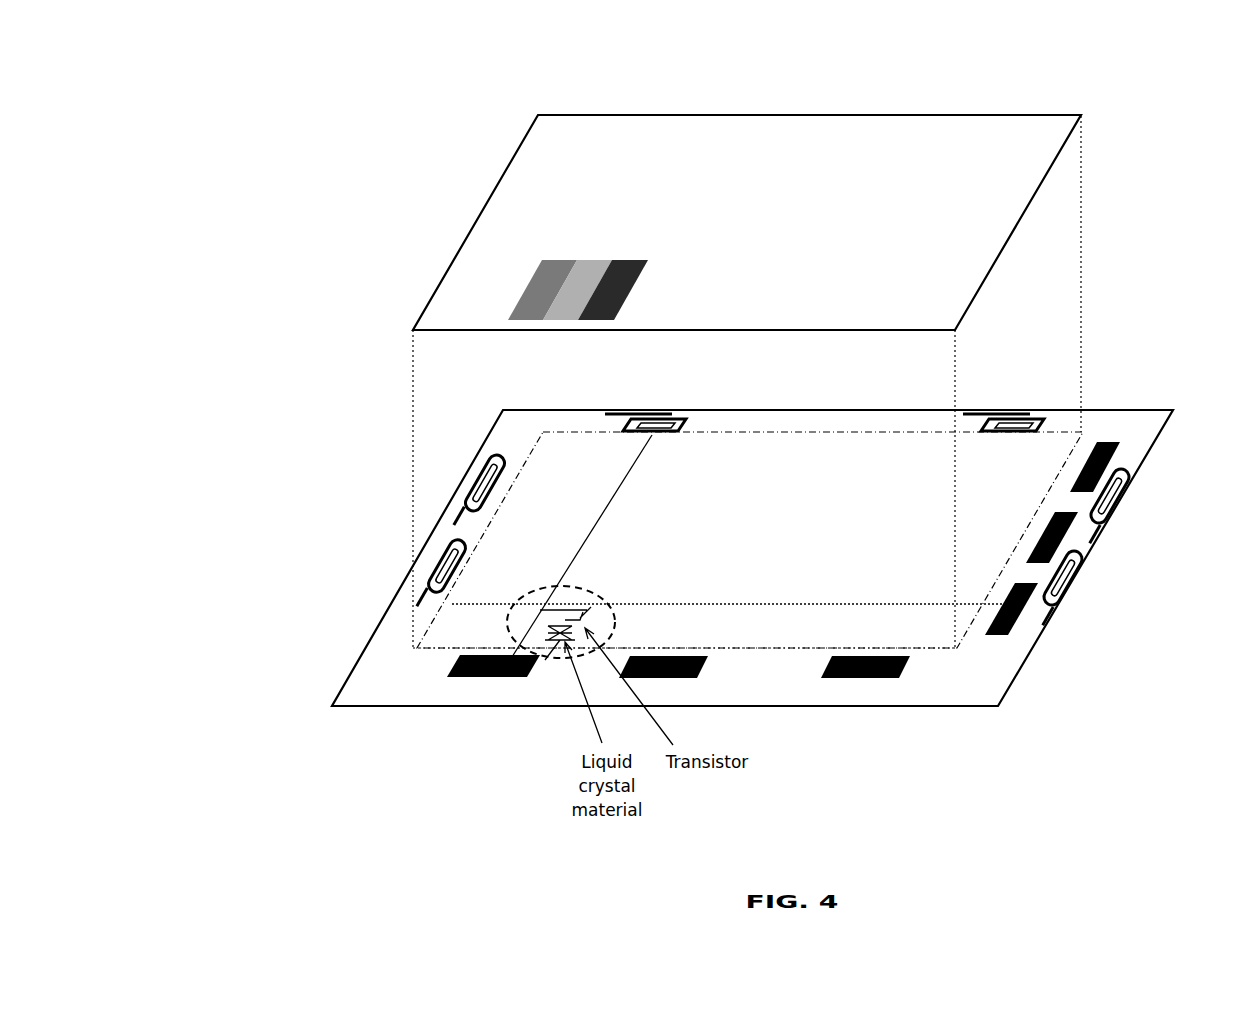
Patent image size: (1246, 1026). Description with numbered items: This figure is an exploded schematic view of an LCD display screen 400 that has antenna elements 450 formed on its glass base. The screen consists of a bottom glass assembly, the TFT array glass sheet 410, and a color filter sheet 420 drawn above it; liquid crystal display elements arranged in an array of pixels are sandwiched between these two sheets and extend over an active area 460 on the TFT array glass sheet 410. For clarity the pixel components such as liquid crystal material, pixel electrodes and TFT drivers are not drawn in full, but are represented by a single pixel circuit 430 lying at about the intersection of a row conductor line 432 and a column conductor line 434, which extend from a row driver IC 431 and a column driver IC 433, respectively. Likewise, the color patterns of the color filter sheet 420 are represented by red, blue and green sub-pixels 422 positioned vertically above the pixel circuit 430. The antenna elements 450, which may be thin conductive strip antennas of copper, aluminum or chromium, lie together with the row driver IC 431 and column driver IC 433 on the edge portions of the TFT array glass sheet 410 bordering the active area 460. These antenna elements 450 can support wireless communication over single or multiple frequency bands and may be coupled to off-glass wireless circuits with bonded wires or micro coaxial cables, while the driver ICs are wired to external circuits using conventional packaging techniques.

The LCD display screen 400 is at (766, 35).
The TFT array glass sheet 410 is at (1000, 708).
The color filter sheet 420 is at (489, 163).
The red, blue and green sub-pixels 422 is at (519, 263).
The pixel circuit 430 is at (496, 635).
The row driver IC 431 is at (1037, 626).
The row conductor line 432 is at (713, 604).
The column driver IC 433 is at (481, 696).
The column conductor line 434 is at (612, 502).
The antenna elements 450 is at (464, 479).
The active area 460 is at (775, 432).